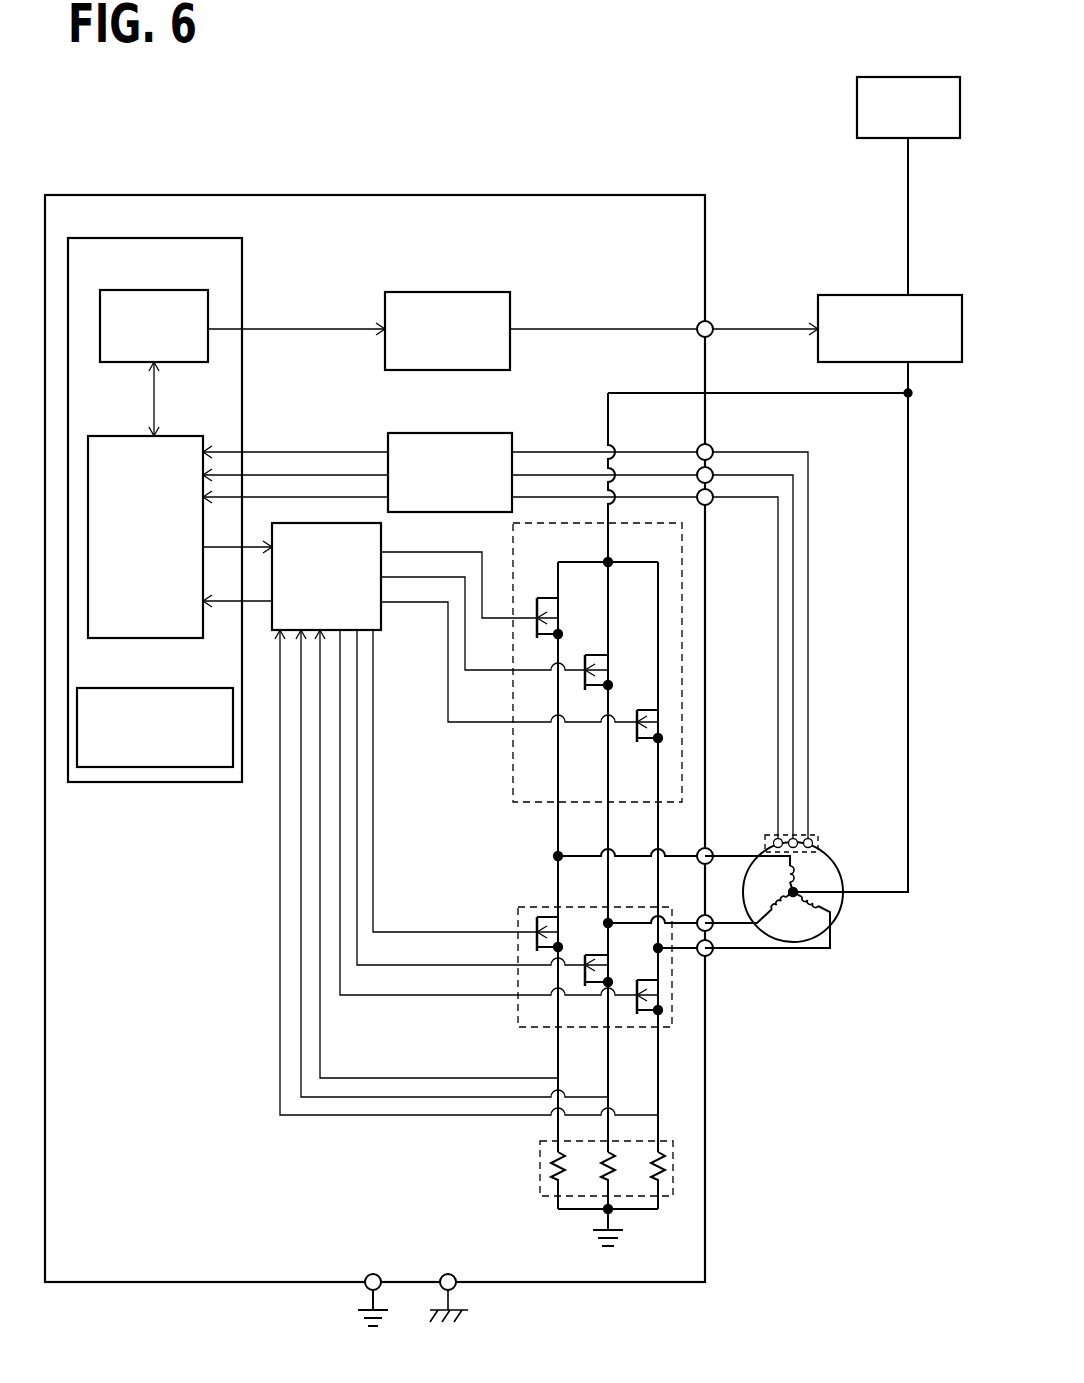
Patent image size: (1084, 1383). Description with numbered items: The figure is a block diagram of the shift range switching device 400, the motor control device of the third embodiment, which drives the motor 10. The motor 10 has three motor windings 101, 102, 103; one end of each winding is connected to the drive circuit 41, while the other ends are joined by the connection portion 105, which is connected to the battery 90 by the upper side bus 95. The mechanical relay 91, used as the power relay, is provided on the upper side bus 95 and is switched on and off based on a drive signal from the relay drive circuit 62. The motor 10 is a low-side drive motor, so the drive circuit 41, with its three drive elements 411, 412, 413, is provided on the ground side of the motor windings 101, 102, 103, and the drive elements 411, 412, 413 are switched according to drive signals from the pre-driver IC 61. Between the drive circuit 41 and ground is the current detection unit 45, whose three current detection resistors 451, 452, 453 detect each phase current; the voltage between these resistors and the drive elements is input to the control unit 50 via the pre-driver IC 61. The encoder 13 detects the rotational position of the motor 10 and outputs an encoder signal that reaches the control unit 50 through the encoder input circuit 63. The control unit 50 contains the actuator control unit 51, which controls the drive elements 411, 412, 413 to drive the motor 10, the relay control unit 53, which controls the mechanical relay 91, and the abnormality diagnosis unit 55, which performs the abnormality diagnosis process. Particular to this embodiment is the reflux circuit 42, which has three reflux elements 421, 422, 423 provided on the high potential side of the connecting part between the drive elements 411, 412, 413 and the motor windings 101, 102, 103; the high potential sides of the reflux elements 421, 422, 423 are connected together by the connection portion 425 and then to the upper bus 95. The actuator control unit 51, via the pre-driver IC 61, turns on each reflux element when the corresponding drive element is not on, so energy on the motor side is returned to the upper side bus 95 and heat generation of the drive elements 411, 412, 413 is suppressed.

The shift range switching device 400 is at (72, 195).
The control unit 50 is at (242, 243).
The relay control unit 53 is at (172, 290).
The actuator control unit 51 is at (172, 436).
The abnormality diagnosis unit 55 is at (172, 688).
The pre-driver IC 61 is at (381, 530).
The relay drive circuit 62 is at (480, 292).
The encoder input circuit 63 is at (480, 433).
The battery 90 is at (857, 112).
The mechanical relay 91 is at (940, 295).
The upper side bus 95 is at (908, 578).
The reflux circuit 42 is at (561, 662).
The reflux element 421 is at (548, 598).
The reflux element 422 is at (598, 655).
The reflux element 423 is at (645, 742).
The connection portion 425 is at (610, 566).
The drive circuit 41 is at (556, 968).
The drive element 411 is at (547, 917).
The drive element 412 is at (598, 955).
The drive element 413 is at (645, 1014).
The current detection unit 45 is at (623, 1188).
The current detection resistor 451 is at (541, 1173).
The current detection resistor 452 is at (612, 1178).
The current detection resistor 453 is at (662, 1175).
The motor 10 is at (814, 930).
The encoder 13 is at (818, 845).
The motor winding 101 is at (798, 876).
The motor winding 102 is at (773, 925).
The motor winding 103 is at (812, 915).
The connection portion 105 is at (794, 898).